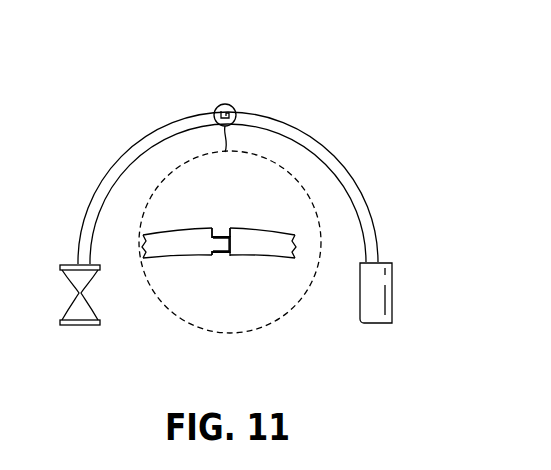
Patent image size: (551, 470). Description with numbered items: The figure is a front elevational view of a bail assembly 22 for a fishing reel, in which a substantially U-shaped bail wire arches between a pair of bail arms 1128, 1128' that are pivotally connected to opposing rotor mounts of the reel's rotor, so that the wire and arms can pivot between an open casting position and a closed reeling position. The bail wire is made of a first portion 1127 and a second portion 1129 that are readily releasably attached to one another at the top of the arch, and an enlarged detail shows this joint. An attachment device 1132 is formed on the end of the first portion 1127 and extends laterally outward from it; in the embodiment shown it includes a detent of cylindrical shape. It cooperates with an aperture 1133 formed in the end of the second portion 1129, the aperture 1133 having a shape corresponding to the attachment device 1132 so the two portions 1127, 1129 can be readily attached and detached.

The bicycle handlebar / arched bar assembly 22 is at (360, 114).
The first portion 1127 is at (180, 118).
The second portion 1129 is at (278, 119).
The bail arm 1128' is at (51, 257).
The bail arm 1128 is at (410, 260).
The attachment device 1132 is at (215, 240).
The aperture 1133 is at (230, 257).